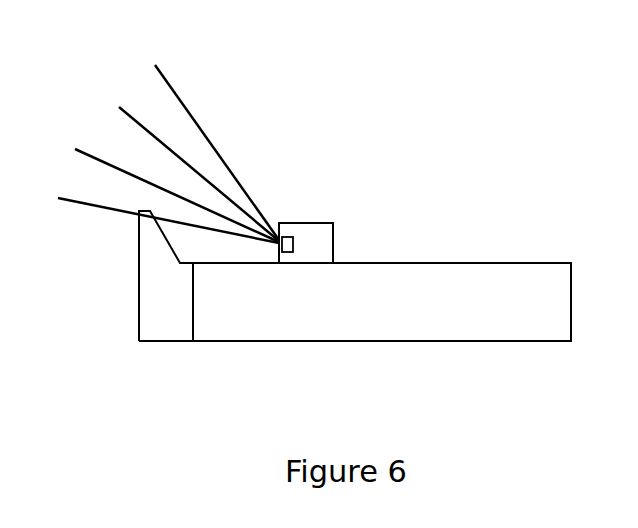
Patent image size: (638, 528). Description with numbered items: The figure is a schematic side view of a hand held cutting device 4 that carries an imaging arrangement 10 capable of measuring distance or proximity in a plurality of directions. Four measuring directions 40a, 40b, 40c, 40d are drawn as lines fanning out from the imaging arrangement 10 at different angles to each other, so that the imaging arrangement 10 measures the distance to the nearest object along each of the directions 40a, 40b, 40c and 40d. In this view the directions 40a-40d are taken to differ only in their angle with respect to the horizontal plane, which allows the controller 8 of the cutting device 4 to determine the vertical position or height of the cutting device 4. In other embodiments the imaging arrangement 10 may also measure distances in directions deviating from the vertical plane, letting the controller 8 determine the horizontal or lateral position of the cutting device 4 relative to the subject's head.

The hand held cutting device 4 is at (571, 304).
The controller 8 is at (165, 325).
The imaging arrangement 10 is at (324, 223).
The measuring direction 40a is at (80, 196).
The measuring direction 40b is at (91, 148).
The measuring direction 40c is at (128, 107).
The measuring direction 40d is at (163, 68).